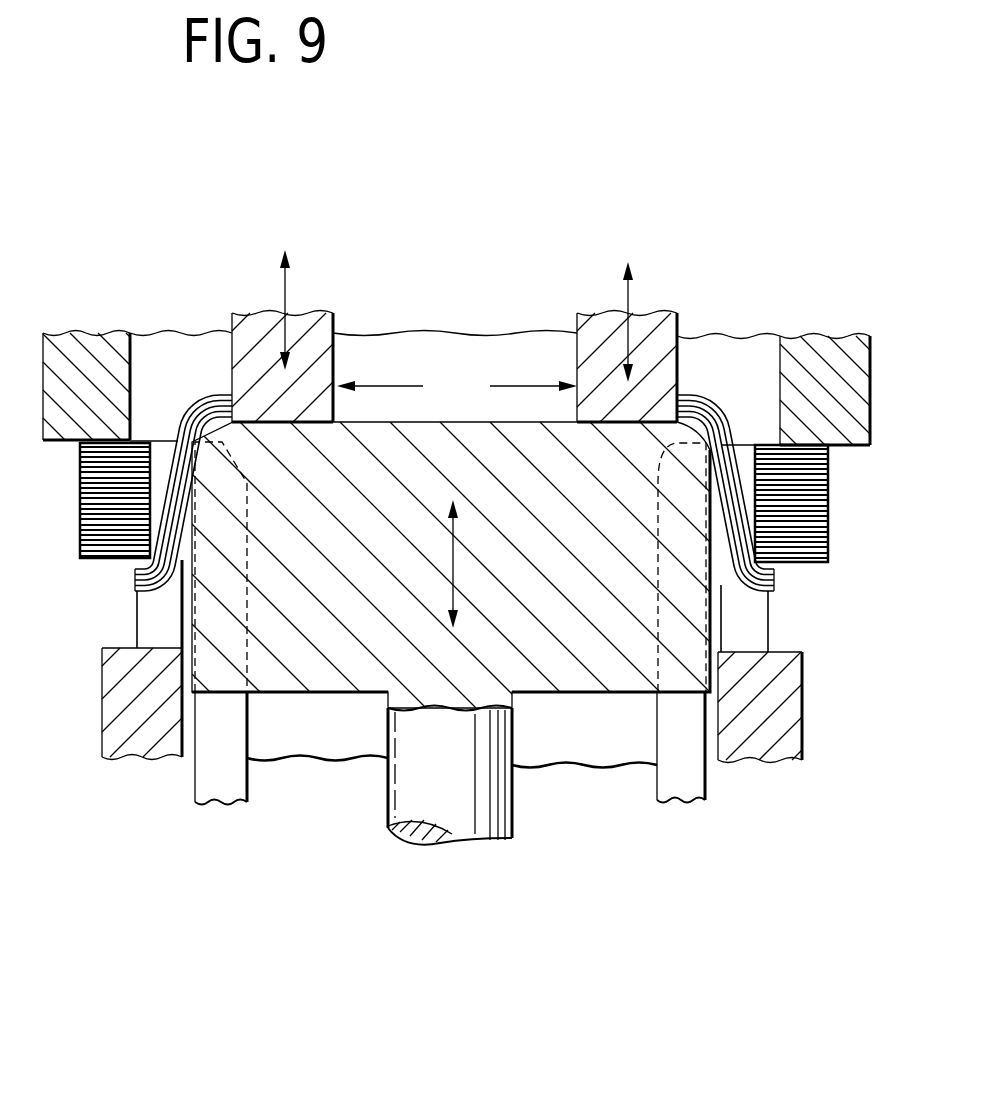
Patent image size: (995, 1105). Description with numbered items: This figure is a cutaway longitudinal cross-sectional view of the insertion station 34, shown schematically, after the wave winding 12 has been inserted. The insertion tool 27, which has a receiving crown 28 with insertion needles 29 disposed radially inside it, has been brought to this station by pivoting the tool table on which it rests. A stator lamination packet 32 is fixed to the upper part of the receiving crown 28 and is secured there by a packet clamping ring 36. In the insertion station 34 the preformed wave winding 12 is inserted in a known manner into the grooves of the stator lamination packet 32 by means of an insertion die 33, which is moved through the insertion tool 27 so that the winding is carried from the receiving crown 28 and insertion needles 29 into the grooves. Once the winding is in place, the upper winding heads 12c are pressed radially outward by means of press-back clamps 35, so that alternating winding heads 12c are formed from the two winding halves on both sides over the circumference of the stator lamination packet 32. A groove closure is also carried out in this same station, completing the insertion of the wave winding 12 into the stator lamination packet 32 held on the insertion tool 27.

The wave winding 12 is at (130, 583).
The upper winding heads 12c is at (697, 397).
The insertion tool 27 is at (768, 703).
The receiving crown 28 is at (748, 623).
The insertion needles 29 is at (693, 788).
The stator lamination packet 32 is at (808, 520).
The insertion die 33 is at (593, 663).
The insertion station 34 is at (262, 838).
The press-back clamps 35 is at (310, 323).
The packet clamping ring 36 is at (88, 350).